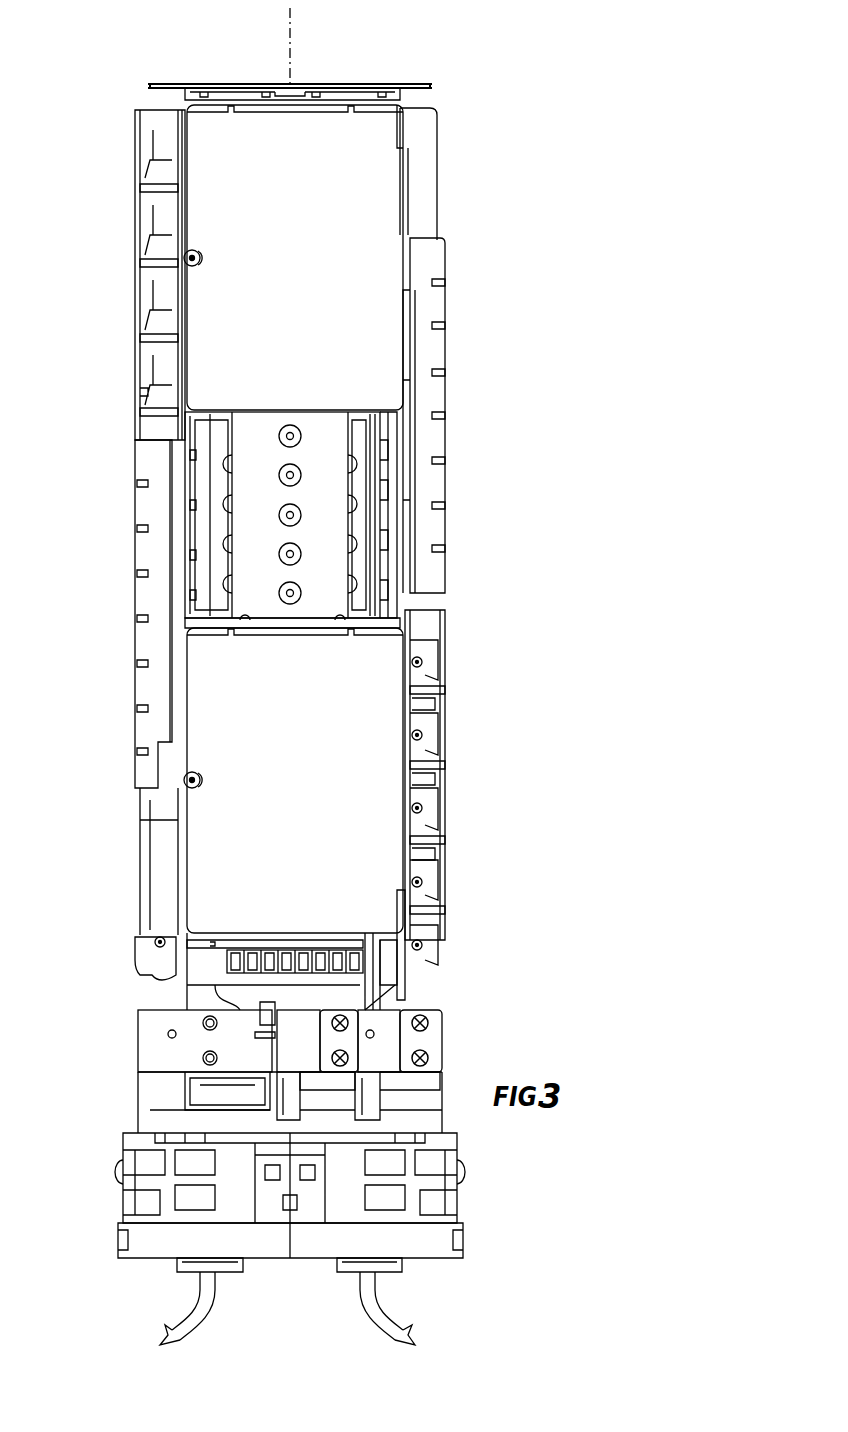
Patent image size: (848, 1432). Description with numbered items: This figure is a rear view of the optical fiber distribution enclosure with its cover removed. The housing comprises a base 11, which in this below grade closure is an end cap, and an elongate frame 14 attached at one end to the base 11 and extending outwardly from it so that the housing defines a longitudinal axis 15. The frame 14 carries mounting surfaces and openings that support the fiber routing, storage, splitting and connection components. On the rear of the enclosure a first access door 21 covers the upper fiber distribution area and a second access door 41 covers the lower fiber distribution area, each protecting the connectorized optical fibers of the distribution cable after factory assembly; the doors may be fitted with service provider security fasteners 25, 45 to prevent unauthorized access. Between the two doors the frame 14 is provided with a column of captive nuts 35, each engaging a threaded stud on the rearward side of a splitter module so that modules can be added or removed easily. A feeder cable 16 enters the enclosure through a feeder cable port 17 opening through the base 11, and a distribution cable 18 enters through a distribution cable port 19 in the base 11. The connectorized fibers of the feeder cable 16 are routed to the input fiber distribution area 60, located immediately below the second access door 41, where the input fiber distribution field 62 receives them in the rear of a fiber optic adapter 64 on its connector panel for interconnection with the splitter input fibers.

The base 11 is at (125, 1165).
The frame 14 is at (443, 386).
The longitudinal axis 15 is at (292, 84).
The feeder cable 16 is at (394, 1322).
The feeder cable port 17 is at (400, 1265).
The distribution cable 18 is at (176, 1324).
The distribution cable port 19 is at (177, 1265).
The first access door 21 is at (295, 257).
The service provider security fastener 25 is at (186, 258).
The captive nuts 35 is at (279, 515).
The second access door 41 is at (295, 780).
The service provider security fastener 45 is at (186, 780).
The input fiber distribution area 60 is at (218, 965).
The input fiber distribution field 62 is at (287, 950).
The fiber optic adapter 64 is at (250, 945).